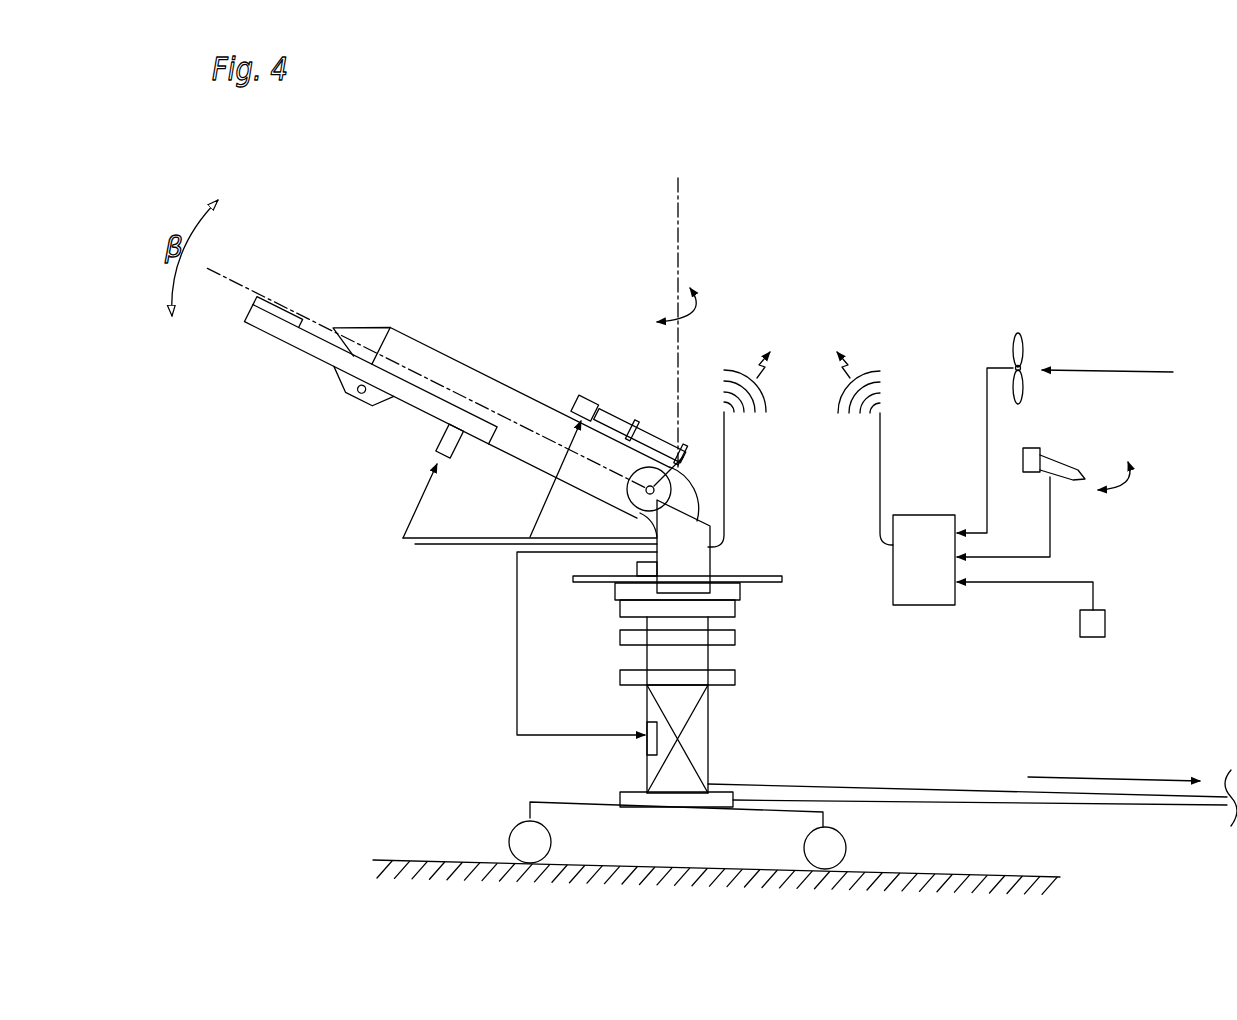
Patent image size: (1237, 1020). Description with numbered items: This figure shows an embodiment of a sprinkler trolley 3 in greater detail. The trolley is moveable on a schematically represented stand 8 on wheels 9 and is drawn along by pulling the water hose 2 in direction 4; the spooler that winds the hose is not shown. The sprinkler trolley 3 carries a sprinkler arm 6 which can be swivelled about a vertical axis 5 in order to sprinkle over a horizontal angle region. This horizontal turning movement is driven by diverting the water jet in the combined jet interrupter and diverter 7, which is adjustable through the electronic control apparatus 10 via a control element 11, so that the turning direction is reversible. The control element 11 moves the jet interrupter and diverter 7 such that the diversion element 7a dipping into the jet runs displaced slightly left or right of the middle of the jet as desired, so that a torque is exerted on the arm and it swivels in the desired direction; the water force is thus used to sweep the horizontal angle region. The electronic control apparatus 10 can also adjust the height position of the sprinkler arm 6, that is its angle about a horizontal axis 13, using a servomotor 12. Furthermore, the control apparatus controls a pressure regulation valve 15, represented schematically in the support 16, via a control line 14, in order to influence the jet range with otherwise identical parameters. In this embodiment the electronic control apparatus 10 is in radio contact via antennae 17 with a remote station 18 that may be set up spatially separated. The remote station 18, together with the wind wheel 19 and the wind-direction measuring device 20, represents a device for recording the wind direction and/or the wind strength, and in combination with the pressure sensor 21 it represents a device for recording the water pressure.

The water hose 2 is at (857, 787).
The sprinkler trolley 3 is at (565, 356).
The direction 4 is at (1075, 777).
The vertical axis 5 is at (680, 262).
The sprinkler arm 6 is at (440, 367).
The combined jet interrupter and diverter 7 is at (300, 343).
The diversion element 7a is at (275, 315).
The stand 8 is at (563, 803).
The wheels 9 is at (530, 843).
The electronic control apparatus 10 is at (683, 570).
The control element 11 is at (440, 441).
The servomotor 12 is at (587, 407).
The horizontal axis 13 is at (655, 491).
The control line 14 is at (517, 643).
The pressure regulation valve 15 is at (653, 730).
The support 16 is at (693, 737).
The antennae 17 is at (725, 477).
The remote station 18 is at (913, 543).
The wind wheel 19 is at (1022, 345).
The wind-direction measuring device 20 is at (1067, 470).
The pressure sensor 21 is at (1093, 628).